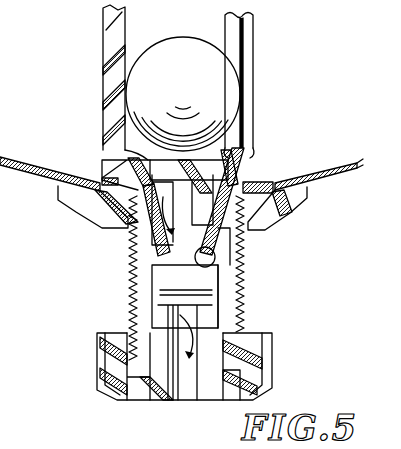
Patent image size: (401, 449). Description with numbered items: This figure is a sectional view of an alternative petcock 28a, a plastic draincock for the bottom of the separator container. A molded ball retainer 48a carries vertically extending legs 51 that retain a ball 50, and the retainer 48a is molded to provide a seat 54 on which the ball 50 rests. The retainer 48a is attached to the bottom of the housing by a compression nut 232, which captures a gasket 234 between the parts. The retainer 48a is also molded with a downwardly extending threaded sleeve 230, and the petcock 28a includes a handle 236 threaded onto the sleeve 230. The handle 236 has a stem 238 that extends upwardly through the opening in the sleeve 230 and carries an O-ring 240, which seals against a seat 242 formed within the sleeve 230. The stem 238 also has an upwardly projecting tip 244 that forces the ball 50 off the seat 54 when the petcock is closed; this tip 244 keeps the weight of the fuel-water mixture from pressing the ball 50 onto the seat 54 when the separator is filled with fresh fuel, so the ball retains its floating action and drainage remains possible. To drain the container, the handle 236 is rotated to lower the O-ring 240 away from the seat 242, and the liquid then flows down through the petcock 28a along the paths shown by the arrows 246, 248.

The legs 51 is at (110, 43).
The ball retainer 48a is at (107, 93).
The ball 50 is at (222, 72).
The seat 54 is at (147, 148).
The projecting tip 244 is at (183, 160).
The gasket 234 is at (262, 190).
The arrow 246 is at (85, 212).
The compression nut 232 is at (283, 217).
The O-ring 240 is at (130, 244).
The petcock 28a is at (128, 283).
The threaded sleeve 230 is at (245, 253).
The seat 242 is at (228, 294).
The stem 238 is at (250, 305).
The handle 236 is at (235, 318).
The arrow 248 is at (153, 400).